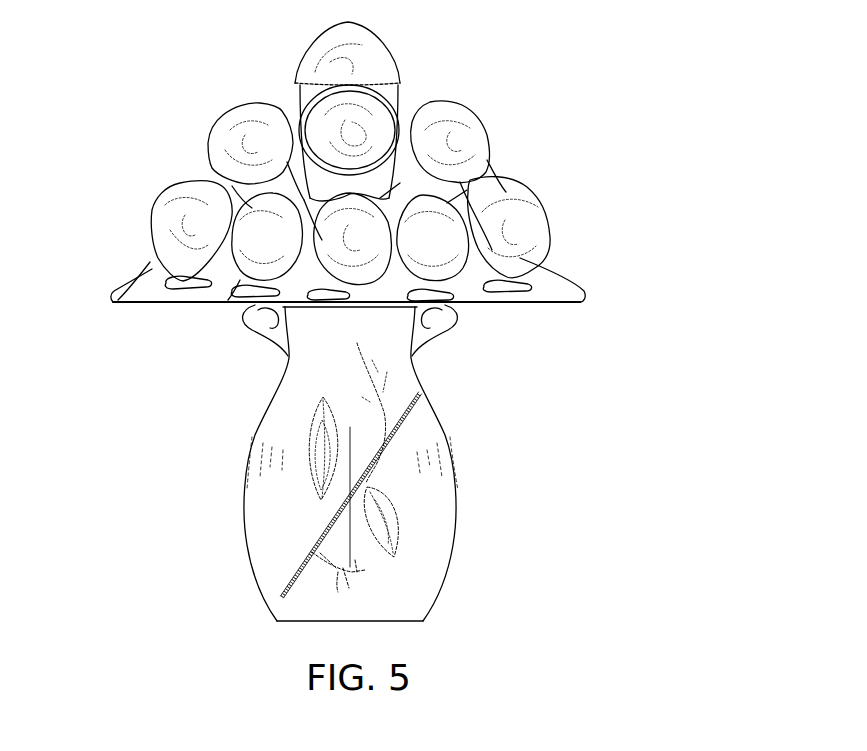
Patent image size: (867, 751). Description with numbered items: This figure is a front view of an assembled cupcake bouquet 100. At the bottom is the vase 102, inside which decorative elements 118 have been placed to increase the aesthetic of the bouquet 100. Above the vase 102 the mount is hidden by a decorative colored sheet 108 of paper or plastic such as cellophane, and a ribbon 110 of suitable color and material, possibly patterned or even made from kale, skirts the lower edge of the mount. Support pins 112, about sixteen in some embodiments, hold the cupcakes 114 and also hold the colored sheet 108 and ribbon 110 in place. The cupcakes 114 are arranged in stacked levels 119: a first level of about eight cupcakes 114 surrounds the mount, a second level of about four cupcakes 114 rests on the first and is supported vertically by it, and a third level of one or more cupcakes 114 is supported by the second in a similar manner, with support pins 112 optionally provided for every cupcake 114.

The cupcake bouquet 100 is at (650, 75).
The vase 102 is at (445, 587).
The decorative colored sheet 108 is at (427, 333).
The ribbon 110 is at (584, 290).
The support pins 112 is at (258, 302).
The cupcakes 114 is at (449, 102).
The decorative elements 118 is at (380, 458).
The level of cupcakes 119 is at (214, 151).